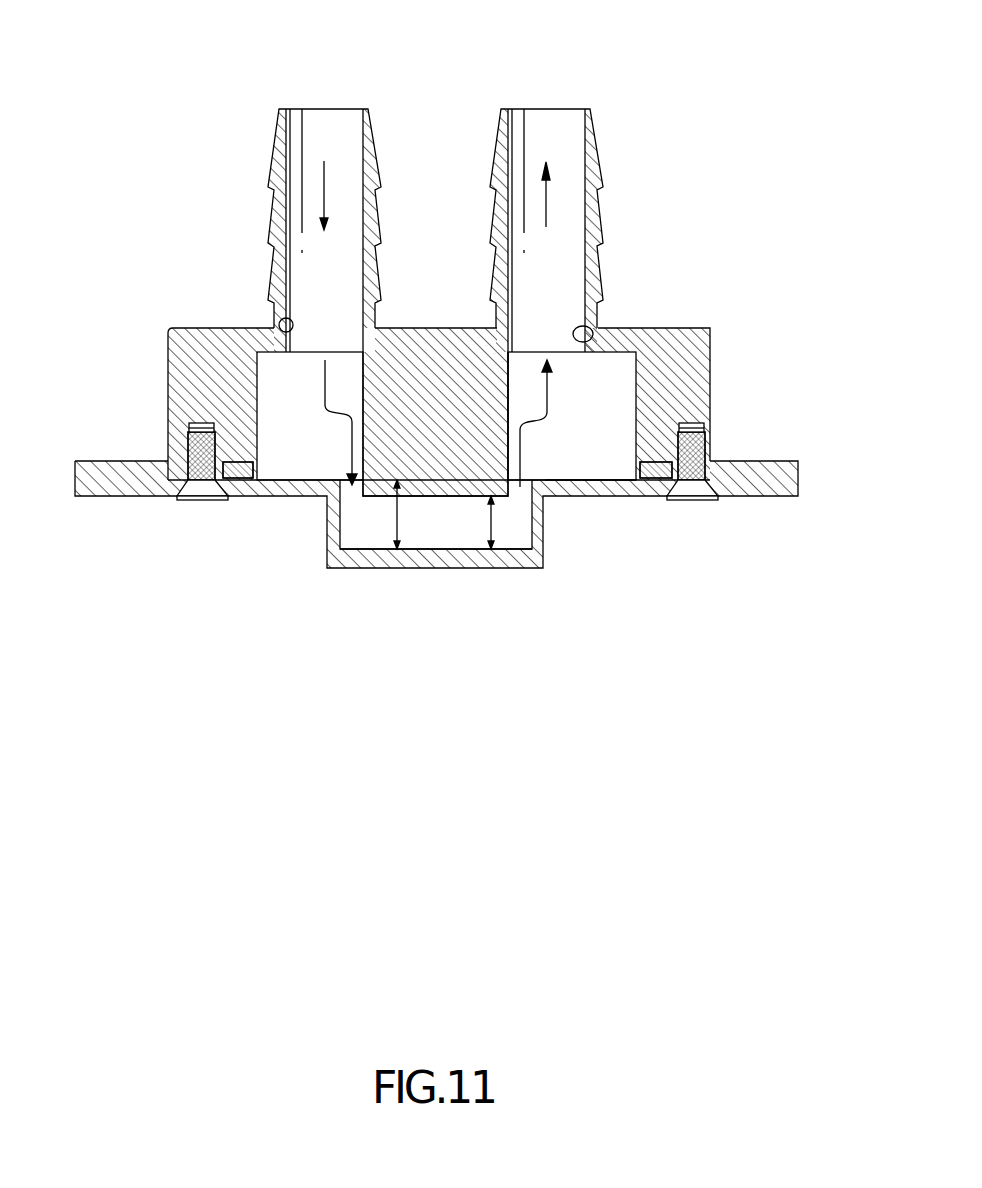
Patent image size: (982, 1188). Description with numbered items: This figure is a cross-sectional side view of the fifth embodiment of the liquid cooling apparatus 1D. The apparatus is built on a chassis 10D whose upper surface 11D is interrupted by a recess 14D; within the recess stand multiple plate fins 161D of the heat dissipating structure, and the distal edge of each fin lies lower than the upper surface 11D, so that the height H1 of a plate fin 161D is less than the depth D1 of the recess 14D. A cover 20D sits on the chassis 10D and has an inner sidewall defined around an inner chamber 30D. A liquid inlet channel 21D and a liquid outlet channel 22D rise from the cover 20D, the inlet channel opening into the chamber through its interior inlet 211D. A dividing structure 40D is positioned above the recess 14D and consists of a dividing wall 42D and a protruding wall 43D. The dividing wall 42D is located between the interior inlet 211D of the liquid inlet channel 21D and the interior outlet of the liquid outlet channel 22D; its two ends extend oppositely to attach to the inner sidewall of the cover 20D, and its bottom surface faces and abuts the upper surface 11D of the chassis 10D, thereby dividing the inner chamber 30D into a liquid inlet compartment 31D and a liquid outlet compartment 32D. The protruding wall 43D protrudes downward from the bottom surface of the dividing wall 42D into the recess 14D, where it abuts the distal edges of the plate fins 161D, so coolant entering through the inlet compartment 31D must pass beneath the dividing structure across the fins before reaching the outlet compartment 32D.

The liquid cooling apparatus 1D is at (485, 80).
The liquid inlet channel 21D is at (300, 180).
The liquid outlet channel 22D is at (575, 180).
The interior inlet 211D is at (280, 320).
The dividing structure 40D is at (418, 329).
The dividing wall 42D is at (513, 352).
The cover 20D is at (693, 352).
The liquid inlet compartment 31D is at (265, 418).
The liquid outlet compartment 32D is at (623, 407).
The chassis 10D is at (240, 483).
The upper surface 11D is at (297, 468).
The recess 14D is at (350, 540).
The protruding wall 43D is at (442, 495).
The plate fin 161D is at (465, 540).
The inner chamber 30D is at (599, 460).
The depth of the recess D1 is at (377, 514).
The height of the plate fin H1 is at (472, 522).